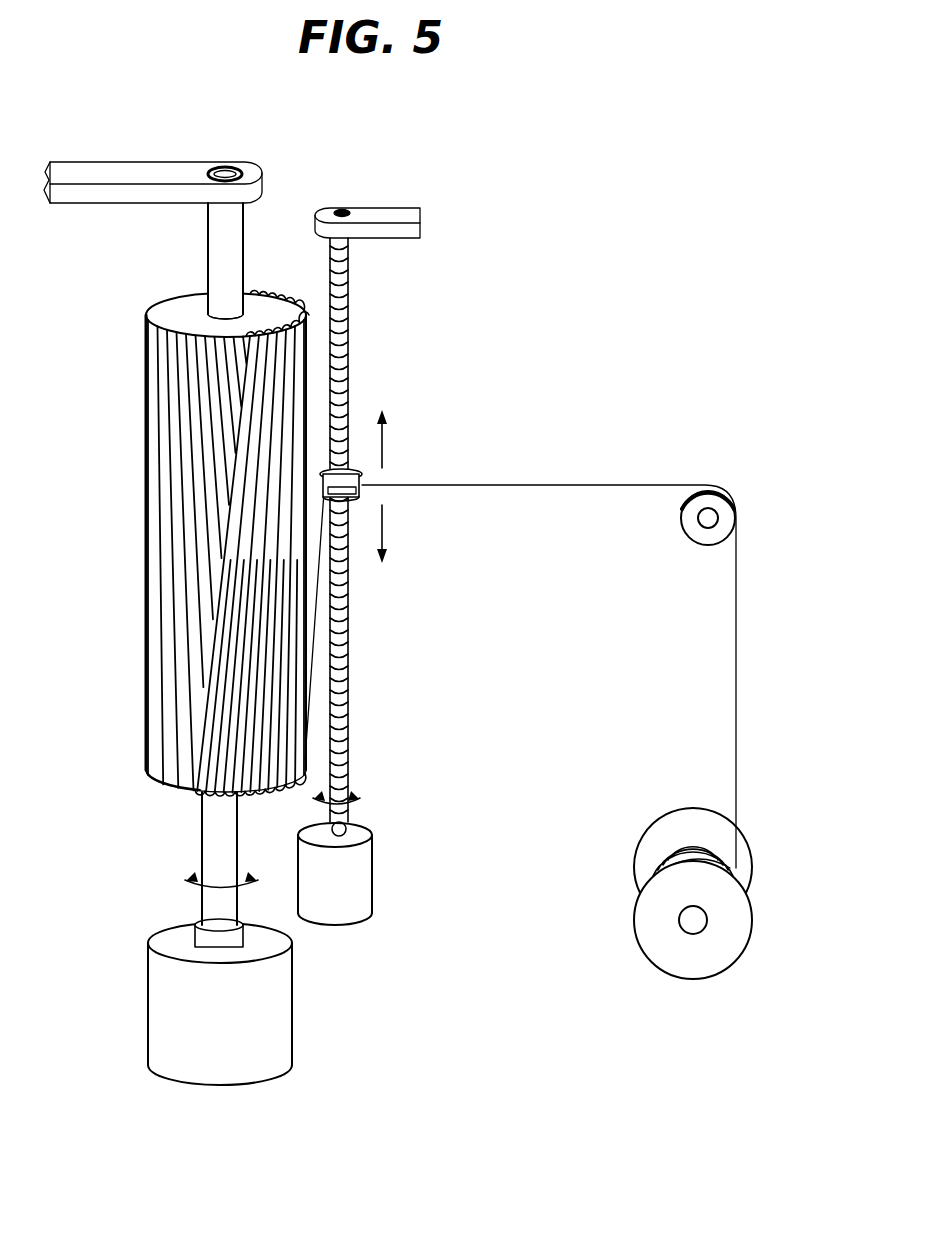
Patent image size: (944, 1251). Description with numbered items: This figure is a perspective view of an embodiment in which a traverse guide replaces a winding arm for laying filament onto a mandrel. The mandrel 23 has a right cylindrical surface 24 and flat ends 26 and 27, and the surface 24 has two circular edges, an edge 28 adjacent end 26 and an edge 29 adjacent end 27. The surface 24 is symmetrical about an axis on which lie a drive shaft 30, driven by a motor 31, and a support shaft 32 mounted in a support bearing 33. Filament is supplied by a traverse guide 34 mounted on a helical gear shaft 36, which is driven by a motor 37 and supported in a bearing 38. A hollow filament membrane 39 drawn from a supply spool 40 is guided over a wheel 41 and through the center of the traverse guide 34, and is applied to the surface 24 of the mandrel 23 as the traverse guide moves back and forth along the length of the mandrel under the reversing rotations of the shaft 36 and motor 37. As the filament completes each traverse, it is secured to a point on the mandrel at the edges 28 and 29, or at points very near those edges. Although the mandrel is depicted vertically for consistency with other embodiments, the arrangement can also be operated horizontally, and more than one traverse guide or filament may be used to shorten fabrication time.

The mandrel 23 is at (173, 543).
The right cylindrical surface 24 is at (140, 622).
The flat end 26 is at (186, 300).
The flat end 27 is at (156, 790).
The circular edge 28 is at (150, 314).
The circular edge 29 is at (196, 791).
The drive shaft 30 is at (203, 852).
The motor 31 is at (293, 1012).
The support shaft 32 is at (245, 262).
The support bearing 33 is at (192, 163).
The traverse guide 34 is at (362, 491).
The helical gear shaft 36 is at (350, 324).
The motor 37 is at (373, 884).
The bearing 38 is at (386, 208).
The hollow filament membrane 39 is at (200, 744).
The supply spool 40 is at (650, 838).
The wheel 41 is at (681, 518).